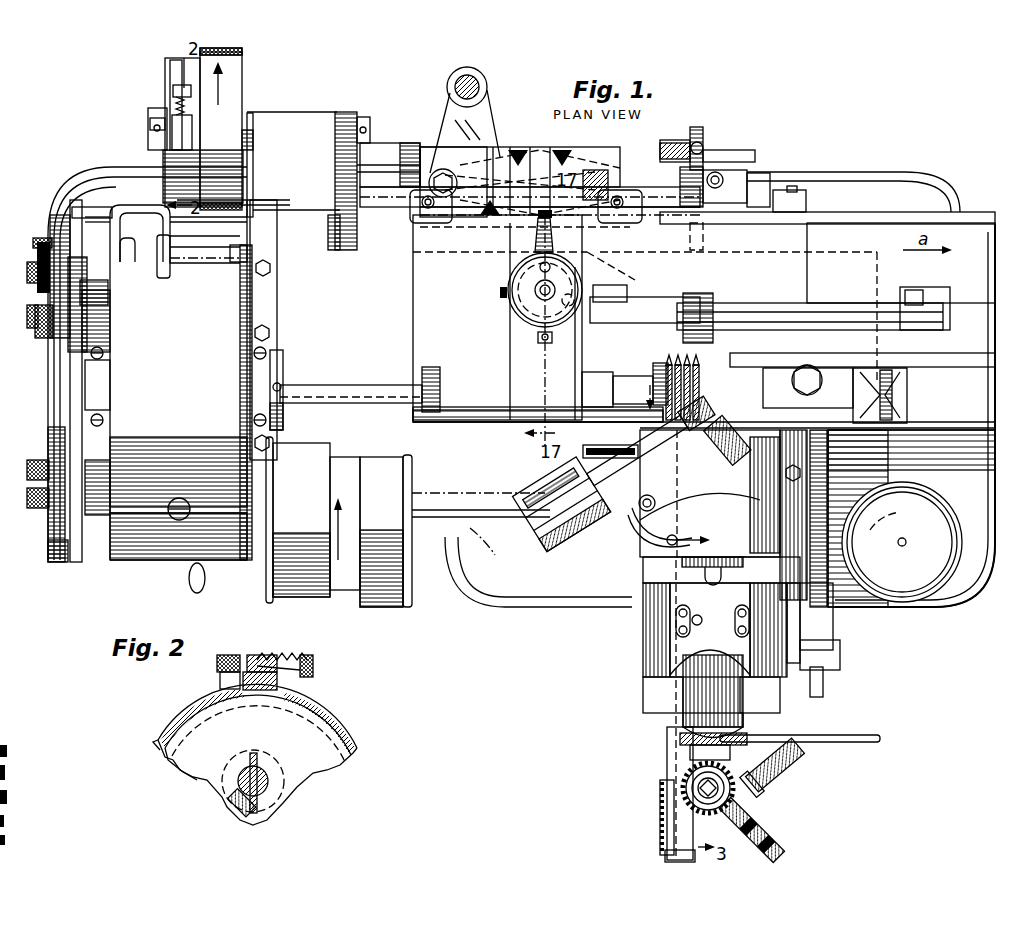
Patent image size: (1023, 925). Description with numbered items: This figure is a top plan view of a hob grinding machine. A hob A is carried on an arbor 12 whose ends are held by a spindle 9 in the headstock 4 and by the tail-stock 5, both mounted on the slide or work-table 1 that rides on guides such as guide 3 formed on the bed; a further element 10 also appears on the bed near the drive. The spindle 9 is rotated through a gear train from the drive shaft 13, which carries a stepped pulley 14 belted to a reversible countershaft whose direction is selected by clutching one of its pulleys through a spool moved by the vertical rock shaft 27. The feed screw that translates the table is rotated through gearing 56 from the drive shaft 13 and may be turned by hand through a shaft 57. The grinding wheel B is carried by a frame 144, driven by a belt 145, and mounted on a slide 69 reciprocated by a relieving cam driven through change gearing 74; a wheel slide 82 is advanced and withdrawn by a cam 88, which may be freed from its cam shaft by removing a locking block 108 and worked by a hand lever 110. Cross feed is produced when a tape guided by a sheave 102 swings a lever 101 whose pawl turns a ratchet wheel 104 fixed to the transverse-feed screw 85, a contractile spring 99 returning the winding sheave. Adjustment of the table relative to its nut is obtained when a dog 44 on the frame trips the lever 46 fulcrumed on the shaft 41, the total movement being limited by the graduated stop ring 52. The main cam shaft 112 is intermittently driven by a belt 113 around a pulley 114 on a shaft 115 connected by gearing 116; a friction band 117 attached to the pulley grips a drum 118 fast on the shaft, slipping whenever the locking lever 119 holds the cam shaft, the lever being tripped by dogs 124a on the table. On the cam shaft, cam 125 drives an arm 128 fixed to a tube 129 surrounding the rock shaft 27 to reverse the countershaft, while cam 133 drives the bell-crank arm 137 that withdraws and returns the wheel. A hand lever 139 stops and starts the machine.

In FIG. 1, the slide or work-table 1 is at (975, 212).
In FIG. 1, the guide 3 is at (730, 440).
In FIG. 1, the headstock 4 is at (538, 330).
In FIG. 1, the tail-stock 5 is at (858, 408).
In FIG. 1, the spindle 9 is at (345, 385).
In FIG. 1, the conduit 10 is at (455, 580).
In FIG. 1, the arbor 12 is at (735, 385).
In FIG. 1, the drive shaft 13 is at (418, 540).
In FIG. 1, the stepped pulley 14 is at (372, 575).
In FIG. 1, the vertical rock shaft 27 is at (467, 123).
In FIG. 1, the shaft 41 is at (537, 293).
In FIG. 1, the dogs 44 is at (432, 222).
In FIG. 1, the lever 46 is at (515, 245).
In FIG. 1, the stop plate or ring 52 is at (525, 316).
In FIG. 1, the gearing 56 is at (55, 335).
In FIG. 1, the shaft 57 is at (825, 686).
In FIG. 1, the slide 69 is at (650, 700).
In FIG. 1, the change gearing 74 is at (50, 552).
In FIG. 1, the slide 82 is at (610, 665).
In FIG. 1, the adjusting or transverse-feed screw 85 is at (680, 667).
In FIG. 1, the cam 88 is at (690, 783).
In FIG. 1, the coiled contractile spring 99 is at (660, 818).
In FIG. 1, the lever 101 is at (848, 738).
In FIG. 1, the sheave 102 is at (765, 775).
In FIG. 1, the ratchet wheel 104 is at (680, 740).
In FIG. 1, the locking block 108 is at (700, 788).
In FIG. 1, the hand lever 110 is at (748, 826).
In FIG. 1, the cam shaft 112 is at (758, 176).
In FIG. 2, the cam shaft 112 is at (248, 805).
In FIG. 1, the belt 113 is at (243, 51).
In FIG. 1, the pulley 114 is at (238, 95).
In FIG. 1, the shaft 115 is at (148, 125).
In FIG. 1, the gearing 116 is at (335, 162).
In FIG. 1, the friction band 117 is at (175, 72).
In FIG. 2, the friction band 117 is at (343, 735).
In FIG. 1, the drum 118 is at (163, 90).
In FIG. 2, the drum 118 is at (318, 768).
In FIG. 1, the lever 119 is at (725, 168).
In FIG. 1, the dogs 124a is at (805, 200).
In FIG. 1, the cam 125 is at (437, 148).
In FIG. 1, the arm 128 is at (448, 118).
In FIG. 1, the tube 129 is at (482, 80).
In FIG. 1, the cam 133 is at (598, 168).
In FIG. 1, the arm 137 is at (622, 276).
In FIG. 1, the hand lever 139 is at (705, 140).
In FIG. 1, the frame 144 is at (632, 535).
In FIG. 1, the belt 145 is at (590, 452).
In FIG. 1, the hob A is at (650, 382).
In FIG. 1, the grinding wheel B is at (808, 386).